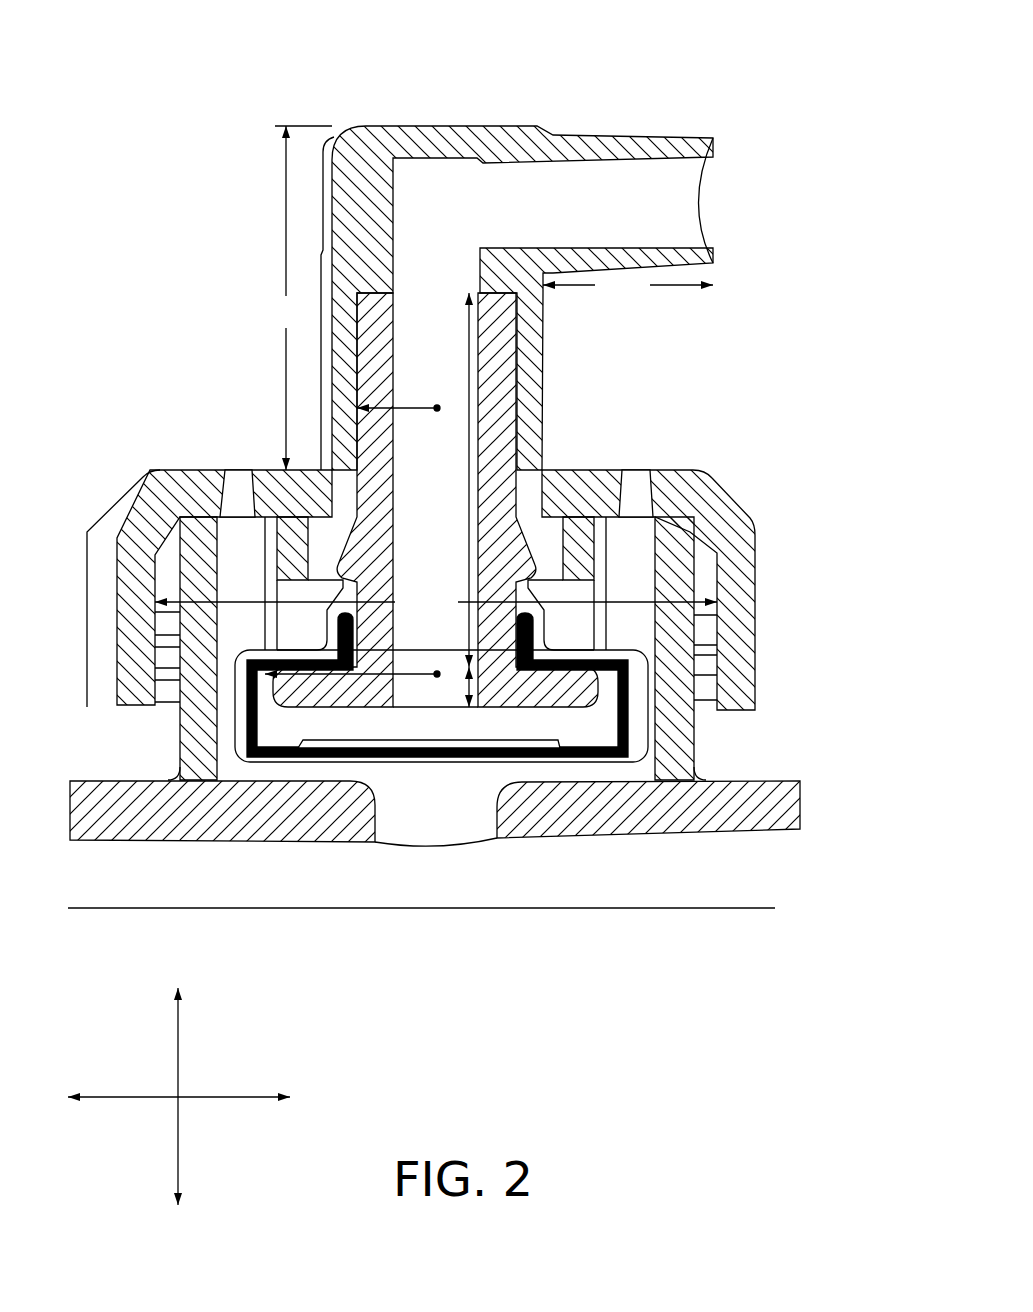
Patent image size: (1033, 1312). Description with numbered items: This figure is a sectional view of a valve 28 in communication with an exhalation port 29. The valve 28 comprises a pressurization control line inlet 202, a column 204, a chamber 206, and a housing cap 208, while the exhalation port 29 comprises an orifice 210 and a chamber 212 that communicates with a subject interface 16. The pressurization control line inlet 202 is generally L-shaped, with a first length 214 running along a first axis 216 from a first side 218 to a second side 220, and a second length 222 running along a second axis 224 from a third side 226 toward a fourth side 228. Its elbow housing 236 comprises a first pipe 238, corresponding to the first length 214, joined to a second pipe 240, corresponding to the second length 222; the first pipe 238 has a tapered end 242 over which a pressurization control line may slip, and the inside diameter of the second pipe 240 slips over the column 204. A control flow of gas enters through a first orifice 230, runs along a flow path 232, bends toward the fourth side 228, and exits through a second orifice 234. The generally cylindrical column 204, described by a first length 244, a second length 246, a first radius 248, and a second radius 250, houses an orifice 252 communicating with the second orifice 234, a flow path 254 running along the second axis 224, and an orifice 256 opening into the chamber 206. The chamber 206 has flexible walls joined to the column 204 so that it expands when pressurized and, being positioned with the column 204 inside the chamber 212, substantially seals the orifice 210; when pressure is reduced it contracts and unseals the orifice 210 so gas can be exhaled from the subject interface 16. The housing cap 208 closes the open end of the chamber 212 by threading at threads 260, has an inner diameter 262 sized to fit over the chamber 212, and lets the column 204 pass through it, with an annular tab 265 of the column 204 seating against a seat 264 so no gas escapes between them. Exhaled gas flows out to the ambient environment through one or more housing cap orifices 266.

The subject interface 16 is at (208, 892).
The valve 28 is at (166, 196).
The exhalation port 29 is at (466, 824).
The pressurization control line inlet 202 is at (326, 130).
The column 204 is at (505, 380).
The chamber 206 is at (580, 735).
The housing cap 208 is at (766, 638).
The orifice 210 is at (422, 783).
The chamber 212 is at (640, 567).
The first length 214 is at (628, 285).
The first axis 216 is at (187, 1070).
The first side 218 is at (735, 412).
The second side 220 is at (182, 412).
The second length 222 is at (298, 298).
The second axis 224 is at (149, 1111).
The third side 226 is at (458, 106).
The fourth side 228 is at (456, 935).
The first orifice 230 is at (702, 205).
The flow path 232 is at (527, 208).
The second orifice 234 is at (412, 288).
The elbow housing 236 is at (367, 170).
The first pipe 238 is at (605, 145).
The second pipe 240 is at (342, 385).
The tapered end 242 is at (688, 132).
The first length 244 is at (470, 465).
The second length 246 is at (475, 688).
The first radius 248 is at (444, 404).
The second radius 250 is at (356, 687).
The orifice 252 is at (426, 296).
The flow path 254 is at (411, 458).
The orifice 256 is at (373, 697).
The threads 260 is at (156, 674).
The inner diameter 262 is at (436, 600).
The seat 264 is at (562, 640).
The annular tab 265 is at (525, 567).
The housing cap orifices 266 is at (236, 476).